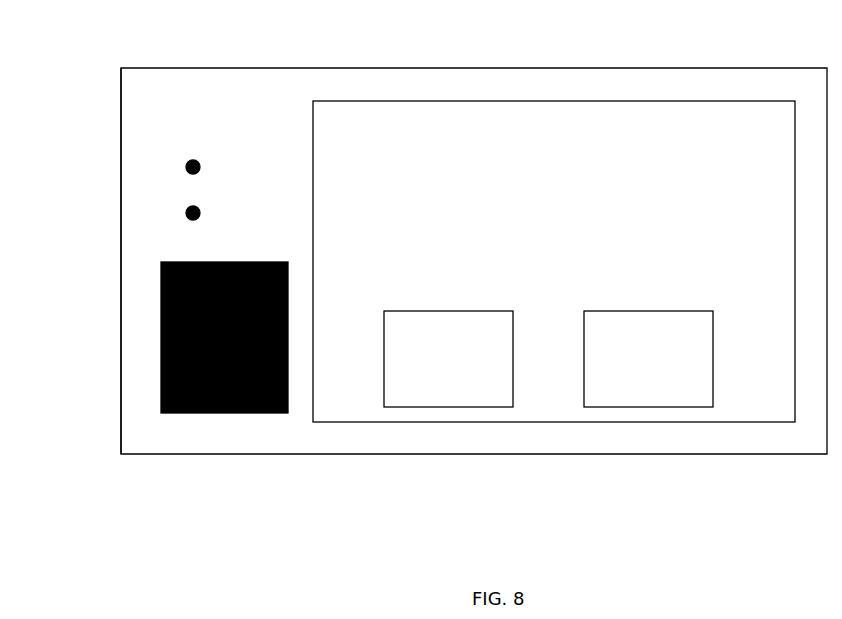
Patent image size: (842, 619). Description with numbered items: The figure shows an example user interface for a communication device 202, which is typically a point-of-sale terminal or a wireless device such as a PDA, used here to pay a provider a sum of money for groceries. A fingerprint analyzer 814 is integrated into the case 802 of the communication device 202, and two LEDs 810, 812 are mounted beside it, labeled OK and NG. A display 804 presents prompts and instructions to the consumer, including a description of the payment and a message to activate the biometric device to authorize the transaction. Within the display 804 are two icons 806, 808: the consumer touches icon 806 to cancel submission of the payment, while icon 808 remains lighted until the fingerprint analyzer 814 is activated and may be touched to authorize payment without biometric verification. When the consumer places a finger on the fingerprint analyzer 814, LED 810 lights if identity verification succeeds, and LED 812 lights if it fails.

The communication device 202 is at (633, 68).
The case 802 is at (121, 133).
The display 804 is at (404, 101).
The icon 806 is at (449, 407).
The icon 808 is at (649, 407).
The LED 810 is at (186, 167).
The LED 812 is at (186, 213).
The fingerprint analyzer 814 is at (161, 335).